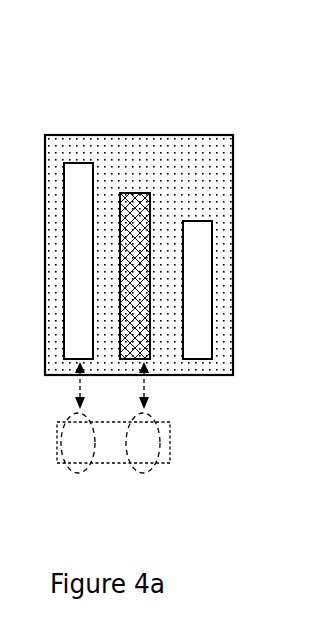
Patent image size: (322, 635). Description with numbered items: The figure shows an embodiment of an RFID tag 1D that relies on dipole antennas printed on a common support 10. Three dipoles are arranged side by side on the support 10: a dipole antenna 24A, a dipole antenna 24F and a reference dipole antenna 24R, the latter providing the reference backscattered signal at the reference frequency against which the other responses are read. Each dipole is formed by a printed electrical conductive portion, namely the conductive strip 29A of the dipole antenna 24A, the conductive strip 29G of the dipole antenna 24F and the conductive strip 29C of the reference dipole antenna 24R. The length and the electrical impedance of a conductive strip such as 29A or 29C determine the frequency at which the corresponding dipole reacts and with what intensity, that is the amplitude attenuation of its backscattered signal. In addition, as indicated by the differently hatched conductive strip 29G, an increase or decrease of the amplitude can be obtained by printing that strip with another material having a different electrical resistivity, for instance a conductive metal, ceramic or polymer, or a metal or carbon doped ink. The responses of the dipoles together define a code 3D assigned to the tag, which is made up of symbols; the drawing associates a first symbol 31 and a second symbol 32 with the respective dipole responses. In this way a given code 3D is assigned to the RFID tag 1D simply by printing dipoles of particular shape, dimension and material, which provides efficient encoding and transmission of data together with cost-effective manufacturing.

The RFID tag 1D is at (157, 280).
The support 10 is at (223, 208).
The dipole antenna 24A is at (176, 226).
The dipole antenna 24F is at (206, 226).
The reference dipole antenna 24R is at (237, 226).
The printed electrical conductive portion 29A is at (87, 287).
The printed electrical conductive portion 29G is at (137, 312).
The printed electrical conductive portion 29C is at (200, 347).
The code 3D is at (126, 469).
The symbol 31 is at (78, 478).
The symbol 32 is at (142, 478).